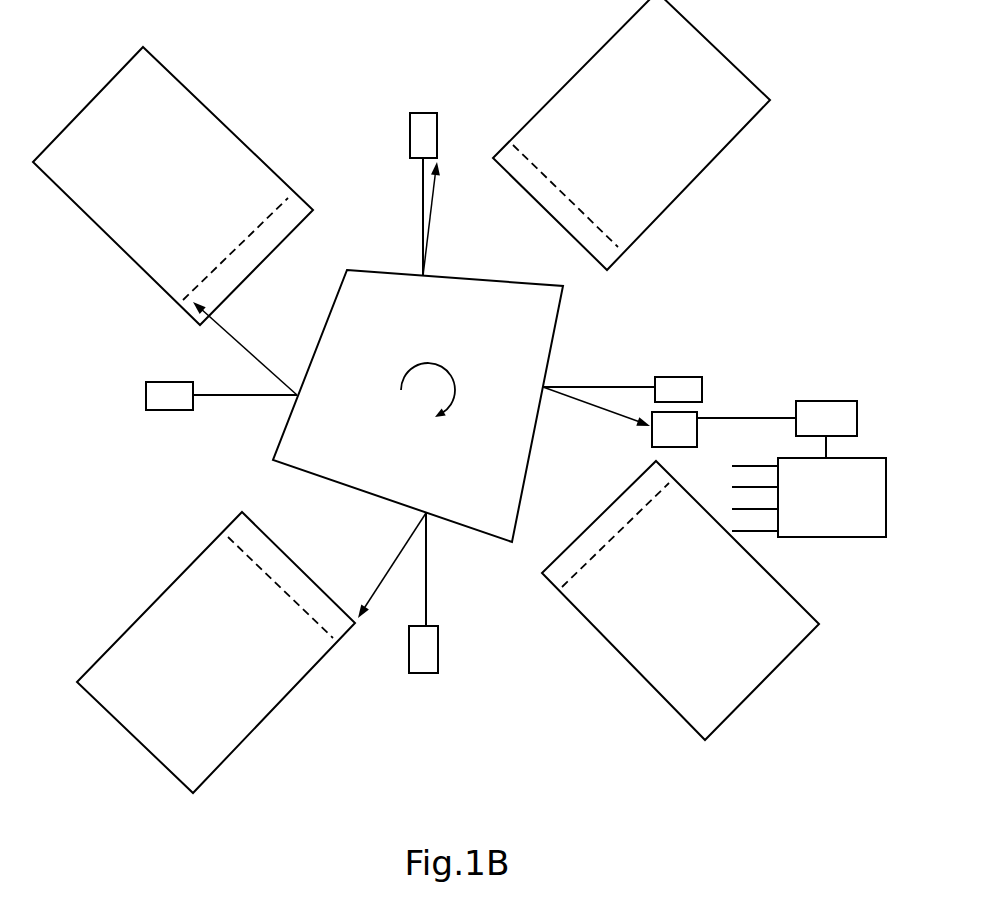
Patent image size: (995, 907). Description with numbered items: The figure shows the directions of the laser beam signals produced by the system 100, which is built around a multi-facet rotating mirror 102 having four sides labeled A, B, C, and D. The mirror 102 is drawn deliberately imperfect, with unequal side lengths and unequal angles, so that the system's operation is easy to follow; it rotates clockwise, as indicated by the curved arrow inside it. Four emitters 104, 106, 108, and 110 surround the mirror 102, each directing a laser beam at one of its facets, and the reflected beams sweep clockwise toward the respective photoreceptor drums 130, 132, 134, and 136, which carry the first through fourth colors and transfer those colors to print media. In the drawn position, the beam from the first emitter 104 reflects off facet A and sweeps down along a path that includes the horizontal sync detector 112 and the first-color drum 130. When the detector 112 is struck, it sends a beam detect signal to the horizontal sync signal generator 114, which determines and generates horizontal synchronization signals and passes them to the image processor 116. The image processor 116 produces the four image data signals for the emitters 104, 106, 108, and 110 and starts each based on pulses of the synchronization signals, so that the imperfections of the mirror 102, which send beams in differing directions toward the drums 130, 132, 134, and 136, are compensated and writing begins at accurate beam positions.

The system 100 is at (757, 233).
The multi-facet rotating mirror 102 is at (548, 358).
The emitter E1 104 is at (680, 377).
The emitter E2 106 is at (422, 673).
The emitter E3 108 is at (168, 410).
The emitter E4 110 is at (422, 113).
The horizontal sync detector 112 is at (650, 440).
The horizontal sync signal generator 114 is at (828, 401).
The image processor 116 is at (860, 458).
The photoreceptor drum 130 is at (583, 528).
The photoreceptor drum 132 is at (313, 578).
The photoreceptor drum 134 is at (223, 120).
The photoreceptor drum 136 is at (542, 103).